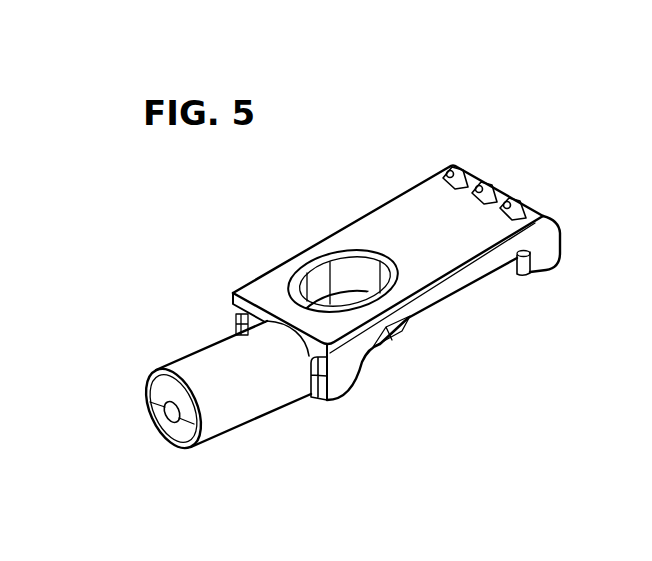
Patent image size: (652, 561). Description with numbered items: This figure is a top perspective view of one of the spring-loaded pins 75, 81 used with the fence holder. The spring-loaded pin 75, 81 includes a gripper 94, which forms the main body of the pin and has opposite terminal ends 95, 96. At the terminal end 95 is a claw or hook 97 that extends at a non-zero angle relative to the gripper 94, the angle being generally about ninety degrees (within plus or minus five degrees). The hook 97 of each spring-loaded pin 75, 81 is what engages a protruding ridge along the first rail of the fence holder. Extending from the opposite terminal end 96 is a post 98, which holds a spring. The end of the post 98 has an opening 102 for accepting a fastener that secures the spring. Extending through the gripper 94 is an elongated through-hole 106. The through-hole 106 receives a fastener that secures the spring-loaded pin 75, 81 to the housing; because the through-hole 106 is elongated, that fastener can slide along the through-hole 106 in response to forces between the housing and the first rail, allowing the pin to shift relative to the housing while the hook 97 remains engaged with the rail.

The spring-loaded pin 75 is at (381, 269).
The spring-loaded pin 81 is at (412, 113).
The gripper 94 is at (382, 228).
The terminal end 95 is at (557, 231).
The terminal end 96 is at (330, 384).
The hook 97 is at (519, 276).
The post 98 is at (176, 369).
The opening 102 is at (171, 418).
The through-hole 106 is at (337, 275).